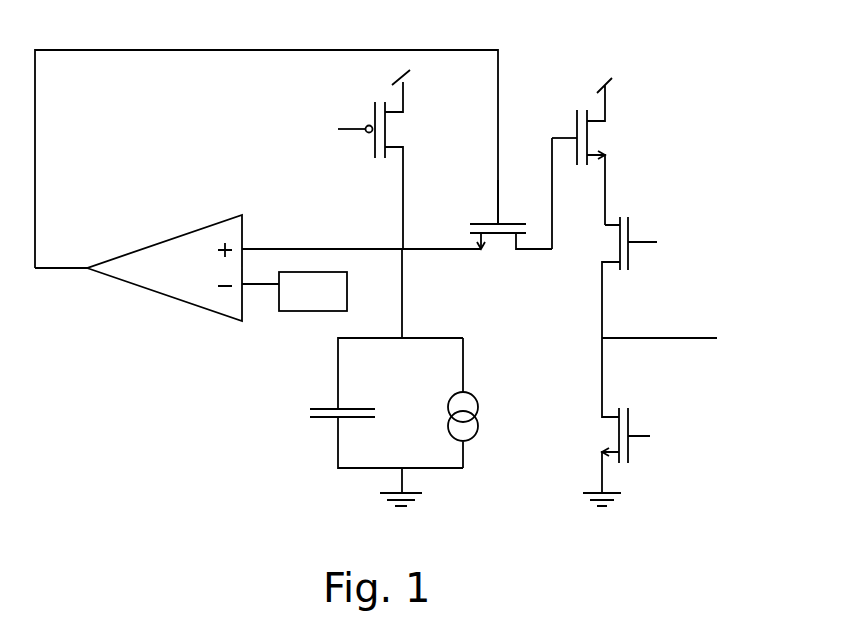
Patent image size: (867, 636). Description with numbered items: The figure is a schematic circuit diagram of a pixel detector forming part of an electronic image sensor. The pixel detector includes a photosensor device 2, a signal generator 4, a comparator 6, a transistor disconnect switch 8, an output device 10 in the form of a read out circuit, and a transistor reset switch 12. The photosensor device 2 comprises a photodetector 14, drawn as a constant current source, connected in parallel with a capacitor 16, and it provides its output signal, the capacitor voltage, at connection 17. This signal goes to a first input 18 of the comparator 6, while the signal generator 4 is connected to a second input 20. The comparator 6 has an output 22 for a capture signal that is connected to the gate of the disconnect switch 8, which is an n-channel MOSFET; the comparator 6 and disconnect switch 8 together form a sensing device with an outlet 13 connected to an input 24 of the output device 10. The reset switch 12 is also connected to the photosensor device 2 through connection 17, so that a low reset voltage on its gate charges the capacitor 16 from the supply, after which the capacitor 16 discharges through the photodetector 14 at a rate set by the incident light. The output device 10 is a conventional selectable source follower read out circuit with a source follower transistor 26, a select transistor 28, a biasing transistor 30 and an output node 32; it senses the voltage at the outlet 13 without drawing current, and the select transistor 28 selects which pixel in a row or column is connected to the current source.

The photosensor device 2 is at (299, 497).
The signal generator 4 is at (347, 288).
The comparator 6 is at (148, 283).
The transistor disconnect switch 8 is at (503, 222).
The output device 10 is at (683, 91).
The transistor reset switch 12 is at (372, 110).
The outlet 13 is at (543, 253).
The photodetector 14 is at (476, 409).
The capacitor 16 is at (312, 418).
The connection 17 is at (404, 247).
The first input 18 is at (285, 247).
The second input 20 is at (258, 290).
The output 22 is at (53, 265).
The input 24 is at (550, 160).
The source follower transistor 26 is at (574, 112).
The select transistor 28 is at (630, 220).
The biasing transistor 30 is at (630, 410).
The output node 32 is at (640, 337).